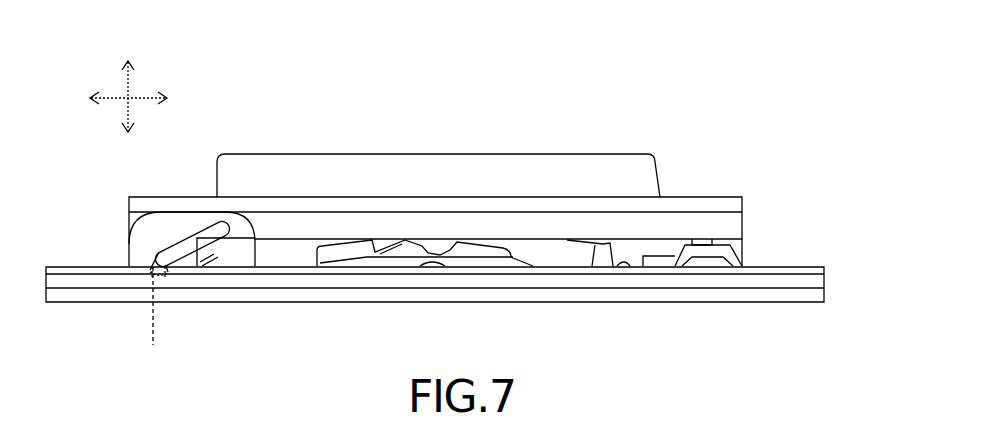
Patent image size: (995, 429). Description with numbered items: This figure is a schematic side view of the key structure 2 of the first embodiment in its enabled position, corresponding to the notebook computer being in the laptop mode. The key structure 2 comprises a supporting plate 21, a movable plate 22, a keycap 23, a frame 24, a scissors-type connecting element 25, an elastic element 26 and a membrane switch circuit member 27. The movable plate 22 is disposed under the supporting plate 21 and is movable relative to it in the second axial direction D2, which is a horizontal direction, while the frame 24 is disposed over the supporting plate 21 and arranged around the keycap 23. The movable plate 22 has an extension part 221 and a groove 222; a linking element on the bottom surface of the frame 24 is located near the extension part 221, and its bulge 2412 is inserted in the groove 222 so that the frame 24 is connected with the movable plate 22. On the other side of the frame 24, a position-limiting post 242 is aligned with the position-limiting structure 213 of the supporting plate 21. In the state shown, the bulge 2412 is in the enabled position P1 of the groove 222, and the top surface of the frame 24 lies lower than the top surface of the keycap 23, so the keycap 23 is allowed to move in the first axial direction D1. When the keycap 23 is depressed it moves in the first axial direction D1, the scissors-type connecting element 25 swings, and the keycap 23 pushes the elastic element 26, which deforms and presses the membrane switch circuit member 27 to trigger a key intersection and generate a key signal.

The key structure 2 is at (313, 91).
The supporting plate 21 is at (728, 280).
The movable plate 22 is at (674, 294).
The keycap 23 is at (583, 157).
The frame 24 is at (681, 198).
The scissors-type connecting element 25 is at (550, 248).
The elastic element 26 is at (486, 260).
The membrane switch circuit member 27 is at (808, 264).
The position-limiting structure 213 is at (738, 255).
The extension part 221 is at (146, 247).
The groove 222 is at (182, 252).
The position-limiting post 242 is at (708, 239).
The bulge 2412 is at (168, 276).
The enabled position P1 is at (150, 318).
The first axial direction D1 is at (128, 81).
The second axial direction D2 is at (146, 100).